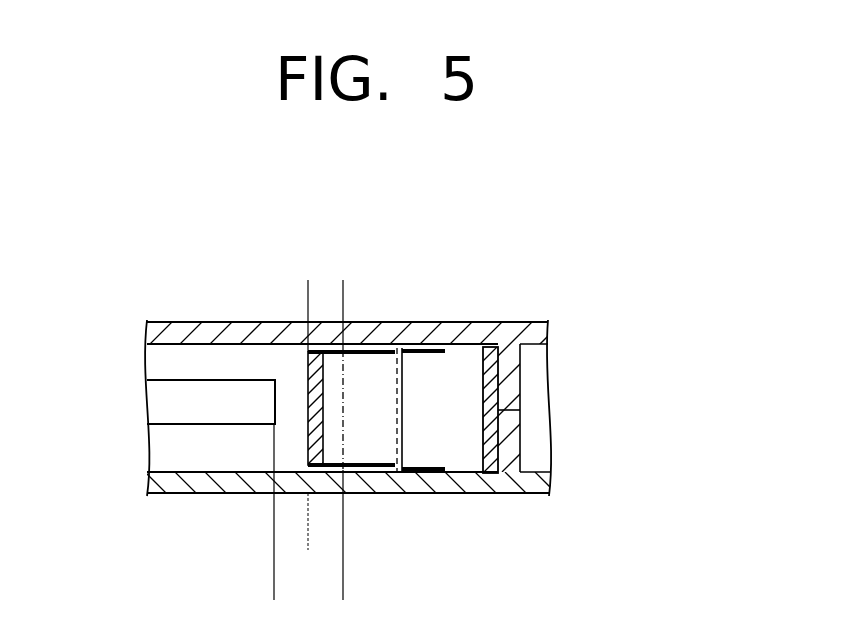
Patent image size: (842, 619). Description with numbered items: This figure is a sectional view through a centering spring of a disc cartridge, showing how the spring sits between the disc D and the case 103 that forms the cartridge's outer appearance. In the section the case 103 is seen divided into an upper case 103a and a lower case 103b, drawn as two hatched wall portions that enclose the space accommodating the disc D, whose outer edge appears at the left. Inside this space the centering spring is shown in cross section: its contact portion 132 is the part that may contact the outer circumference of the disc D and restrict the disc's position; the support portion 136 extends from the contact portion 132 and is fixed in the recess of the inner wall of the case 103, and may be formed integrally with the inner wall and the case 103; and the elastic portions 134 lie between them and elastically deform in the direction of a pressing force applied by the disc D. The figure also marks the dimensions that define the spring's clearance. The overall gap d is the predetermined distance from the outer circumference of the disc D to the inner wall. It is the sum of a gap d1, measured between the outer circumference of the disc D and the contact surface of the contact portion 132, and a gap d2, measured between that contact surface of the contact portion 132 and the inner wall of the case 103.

The case 103 is at (676, 365).
The upper case 103a is at (541, 338).
The lower case 103b is at (544, 482).
The contact portion 132 is at (307, 372).
The elastic portions 134 is at (419, 458).
The support portion 136 is at (494, 347).
The disc D is at (162, 402).
The gap d is at (343, 593).
The gap d1 is at (335, 545).
The gap d2 is at (372, 285).